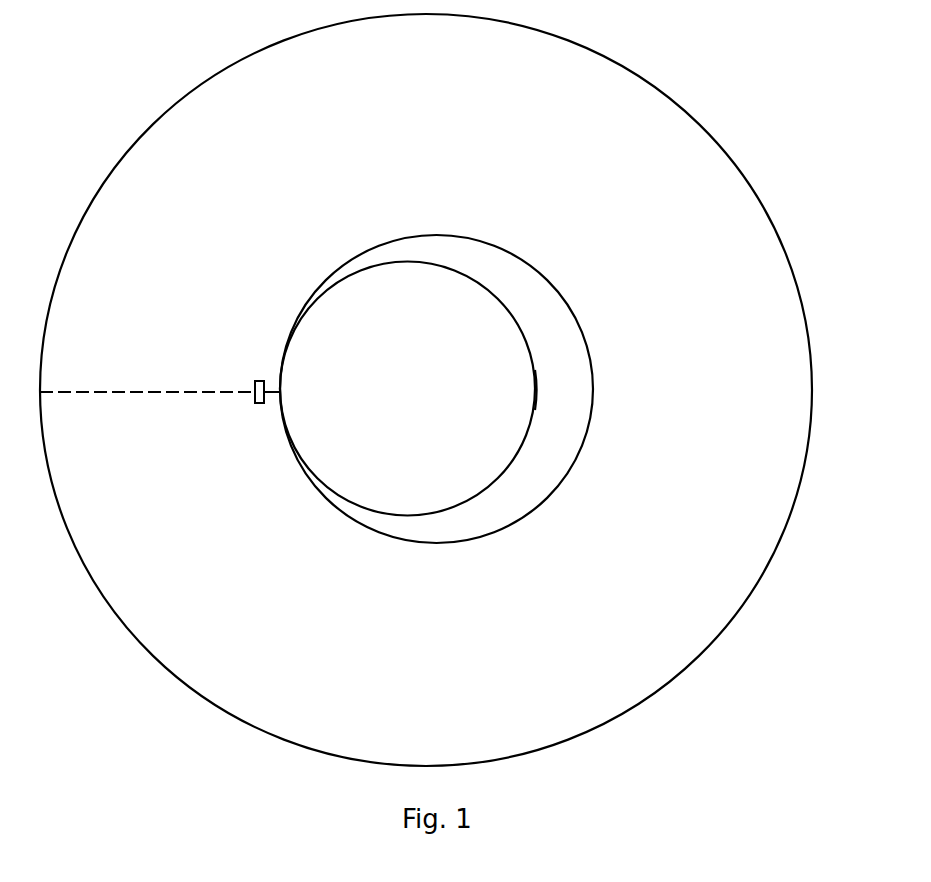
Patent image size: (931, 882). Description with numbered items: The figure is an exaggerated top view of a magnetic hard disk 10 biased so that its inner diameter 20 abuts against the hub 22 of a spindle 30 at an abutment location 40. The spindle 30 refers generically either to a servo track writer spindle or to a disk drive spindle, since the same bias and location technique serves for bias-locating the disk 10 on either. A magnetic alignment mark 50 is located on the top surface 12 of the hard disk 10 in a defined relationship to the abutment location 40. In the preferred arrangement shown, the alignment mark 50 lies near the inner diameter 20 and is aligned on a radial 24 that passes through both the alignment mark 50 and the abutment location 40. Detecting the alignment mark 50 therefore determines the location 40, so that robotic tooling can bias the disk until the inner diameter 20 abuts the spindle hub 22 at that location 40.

The magnetic hard disk 10 is at (632, 655).
The top surface 12 is at (178, 258).
The inner diameter 20 is at (530, 267).
The hub 22 is at (537, 403).
The radial 24 is at (185, 393).
The spindle 30 is at (435, 487).
The abutment location 40 is at (281, 384).
The magnetic alignment mark 50 is at (253, 383).